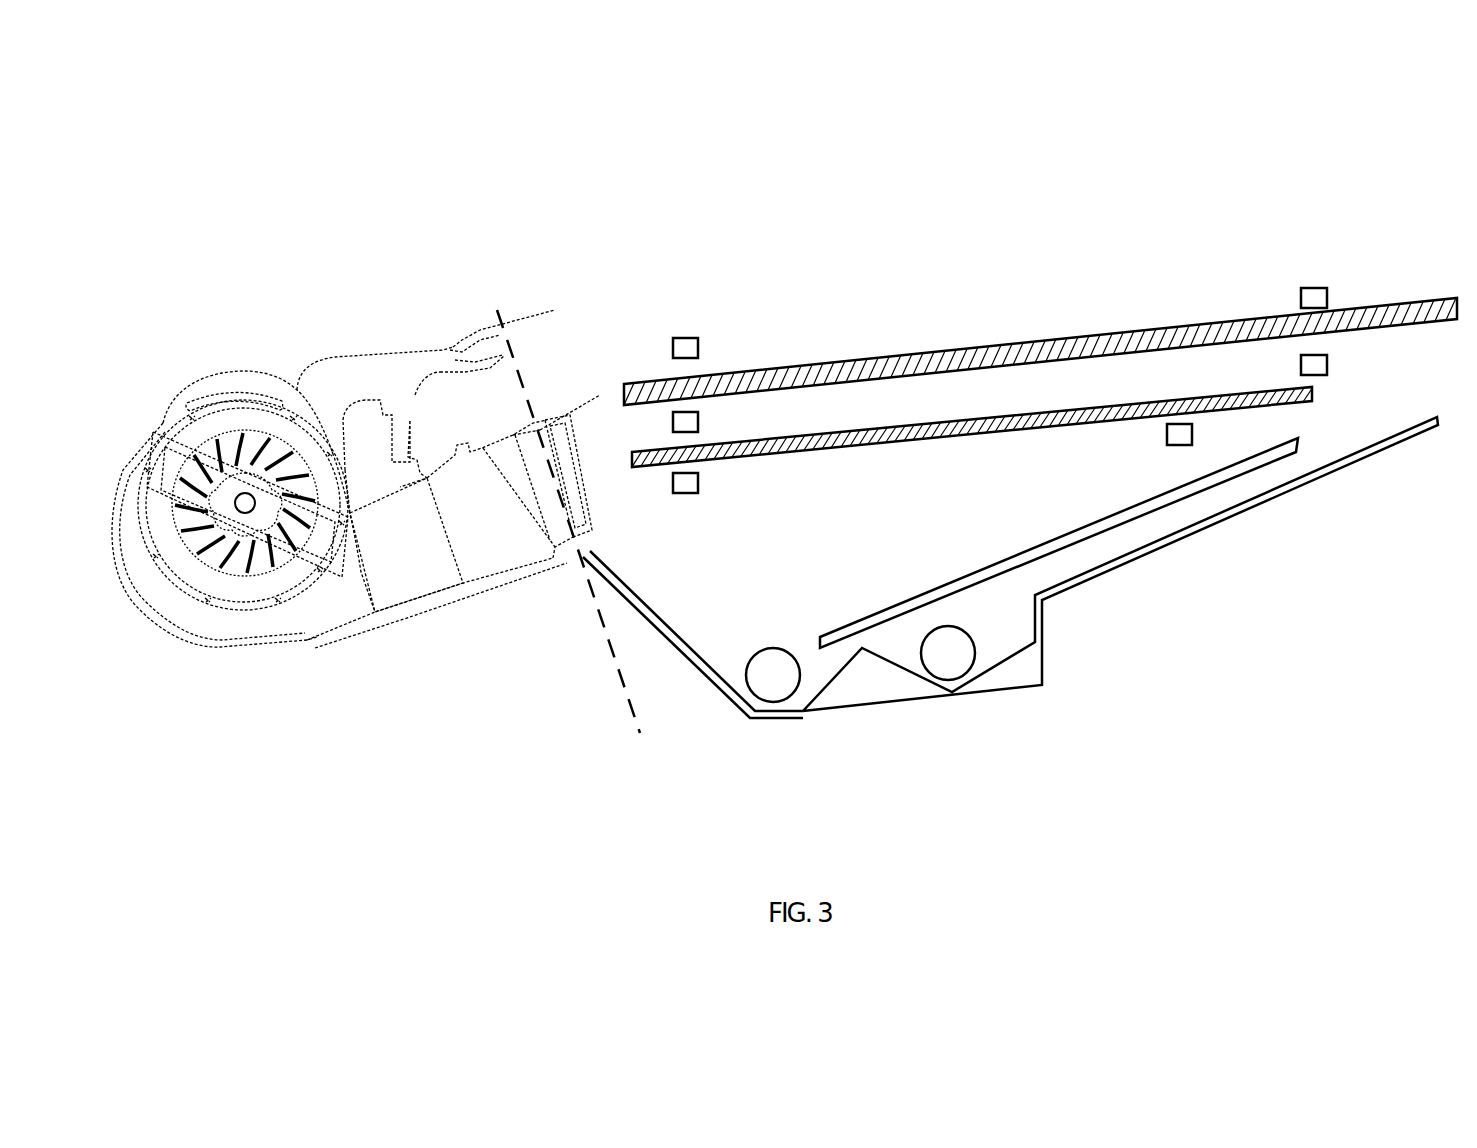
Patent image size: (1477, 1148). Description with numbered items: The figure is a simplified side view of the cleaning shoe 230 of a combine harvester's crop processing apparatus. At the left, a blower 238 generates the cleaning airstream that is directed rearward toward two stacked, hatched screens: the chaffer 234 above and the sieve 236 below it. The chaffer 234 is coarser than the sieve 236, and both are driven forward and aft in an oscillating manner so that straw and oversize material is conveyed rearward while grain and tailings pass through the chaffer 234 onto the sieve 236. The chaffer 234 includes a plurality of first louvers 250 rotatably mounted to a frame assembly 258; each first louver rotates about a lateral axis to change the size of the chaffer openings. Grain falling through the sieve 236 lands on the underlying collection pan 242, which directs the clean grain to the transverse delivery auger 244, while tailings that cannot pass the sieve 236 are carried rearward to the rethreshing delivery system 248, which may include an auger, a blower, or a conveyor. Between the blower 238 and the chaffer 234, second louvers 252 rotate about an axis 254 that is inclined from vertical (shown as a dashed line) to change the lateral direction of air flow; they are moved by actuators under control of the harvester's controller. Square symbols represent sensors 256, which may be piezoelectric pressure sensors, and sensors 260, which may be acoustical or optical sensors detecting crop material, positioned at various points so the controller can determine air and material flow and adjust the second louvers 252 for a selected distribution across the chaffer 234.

The cleaning shoe 230 is at (384, 166).
The chaffer 234 is at (1107, 340).
The sieve 236 is at (1005, 420).
The blower 238 is at (243, 567).
The collection pan 242 is at (1147, 507).
The transverse delivery auger 244 is at (753, 683).
The rethreshing delivery system 248 is at (957, 687).
The first louvers 250 is at (1200, 343).
The second louvers 252 is at (560, 537).
The axis 254 is at (624, 683).
The sensors 256 is at (680, 337).
The frame assembly 258 is at (1275, 323).
The sensors 260 is at (673, 483).